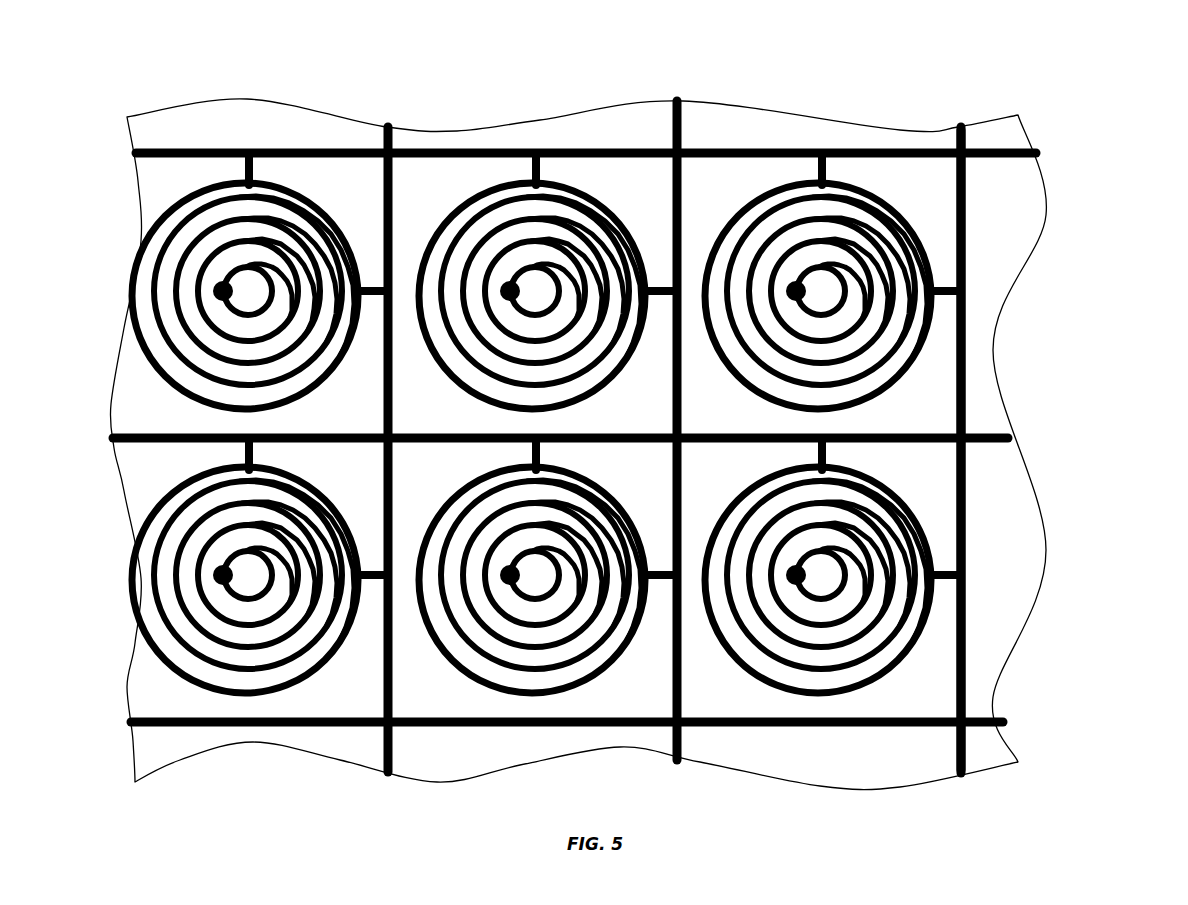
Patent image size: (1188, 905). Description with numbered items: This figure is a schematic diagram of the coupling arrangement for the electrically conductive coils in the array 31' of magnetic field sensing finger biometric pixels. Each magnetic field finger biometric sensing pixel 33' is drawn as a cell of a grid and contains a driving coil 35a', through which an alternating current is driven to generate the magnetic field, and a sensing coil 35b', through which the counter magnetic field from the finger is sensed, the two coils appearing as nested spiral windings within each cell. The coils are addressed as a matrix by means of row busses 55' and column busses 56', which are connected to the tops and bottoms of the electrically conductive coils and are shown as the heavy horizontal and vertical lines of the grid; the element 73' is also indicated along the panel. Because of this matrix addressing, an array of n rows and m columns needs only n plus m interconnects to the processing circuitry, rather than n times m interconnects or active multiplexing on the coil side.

The array of magnetic field sensing finger biometric pixels 31' is at (578, 409).
The magnetic field finger biometric sensing pixel 33' is at (545, 432).
The driving coil 35a' is at (639, 443).
The sensing coil 35b' is at (488, 439).
The row conductor 73' is at (534, 460).
The column bus 56' is at (1026, 450).
The row bus 55' is at (634, 689).